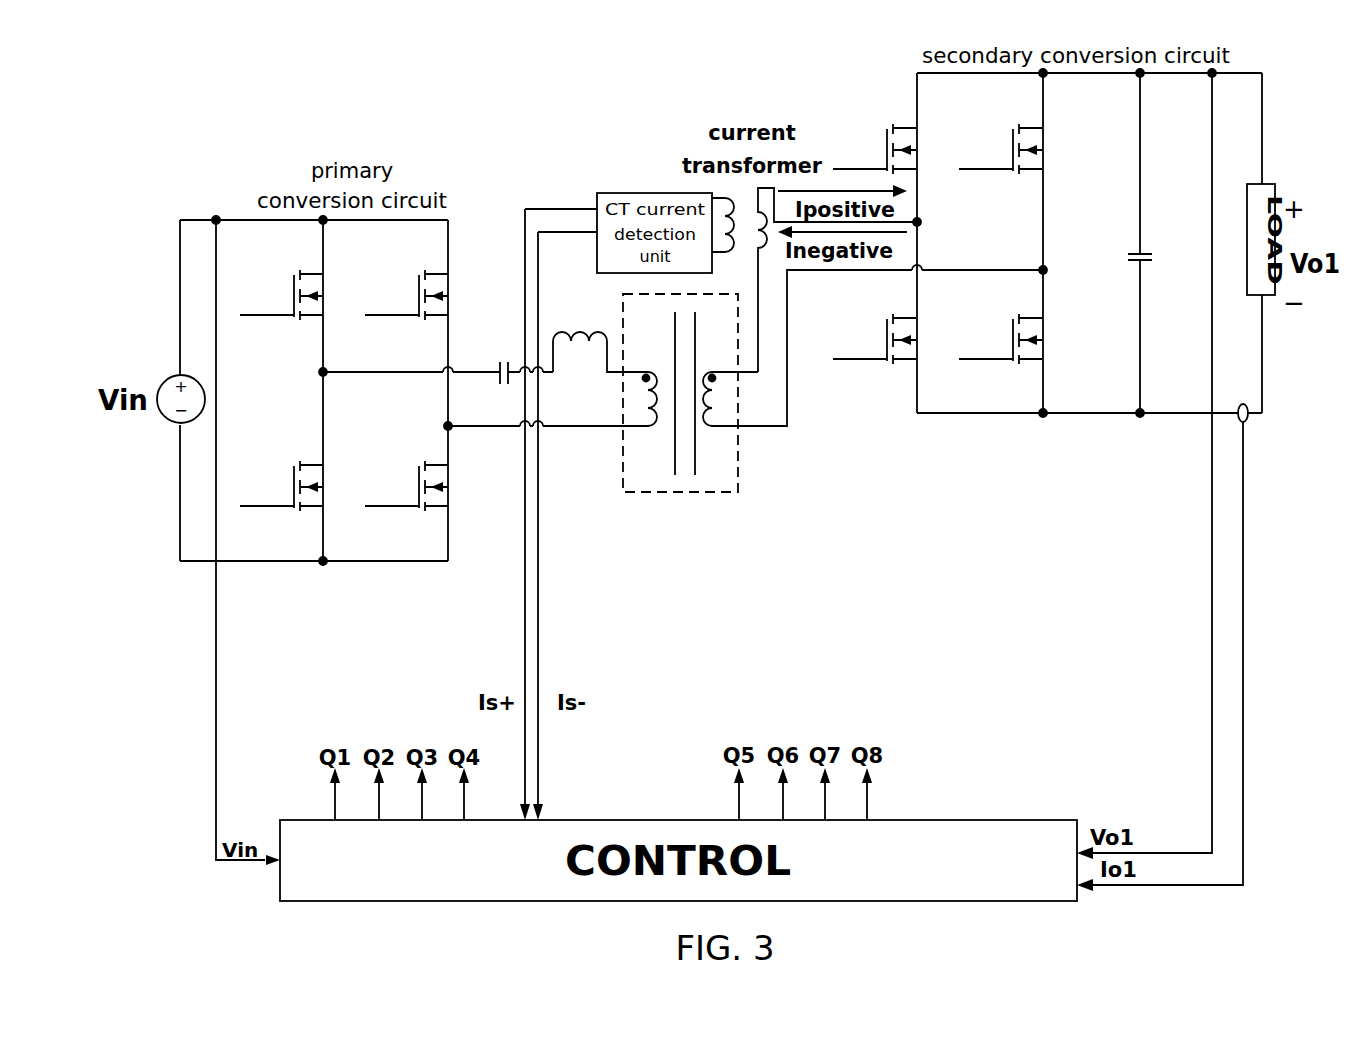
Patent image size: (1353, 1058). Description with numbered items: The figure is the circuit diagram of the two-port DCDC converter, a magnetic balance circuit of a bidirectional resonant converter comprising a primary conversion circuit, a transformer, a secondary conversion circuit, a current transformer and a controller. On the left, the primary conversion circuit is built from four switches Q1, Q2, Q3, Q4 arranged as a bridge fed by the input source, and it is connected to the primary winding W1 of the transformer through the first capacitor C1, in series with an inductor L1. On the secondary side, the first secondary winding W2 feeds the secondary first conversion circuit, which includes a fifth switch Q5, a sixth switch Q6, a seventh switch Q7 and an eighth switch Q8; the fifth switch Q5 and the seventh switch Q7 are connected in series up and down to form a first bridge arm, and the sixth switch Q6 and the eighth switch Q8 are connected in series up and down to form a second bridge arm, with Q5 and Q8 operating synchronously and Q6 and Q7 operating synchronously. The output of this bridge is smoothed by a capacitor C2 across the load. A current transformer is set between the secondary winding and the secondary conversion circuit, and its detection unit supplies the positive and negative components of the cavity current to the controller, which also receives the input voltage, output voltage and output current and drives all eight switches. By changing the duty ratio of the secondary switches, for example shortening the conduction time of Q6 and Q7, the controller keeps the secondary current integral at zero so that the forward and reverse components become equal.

The primary switch Q1 is at (281, 281).
The primary switch Q2 is at (406, 281).
The primary switch Q3 is at (281, 473).
The primary switch Q4 is at (406, 473).
The 5th switch Q5 is at (874, 133).
The 6th switch Q6 is at (1000, 133).
The 7th switch Q7 is at (874, 323).
The 8th switch Q8 is at (1000, 323).
The first capacitor C1 is at (502, 357).
The resonant inductor L1 is at (600, 337).
The primary winding W1 is at (637, 399).
The first secondary winding W2 is at (725, 399).
The output capacitor C2 is at (1158, 257).